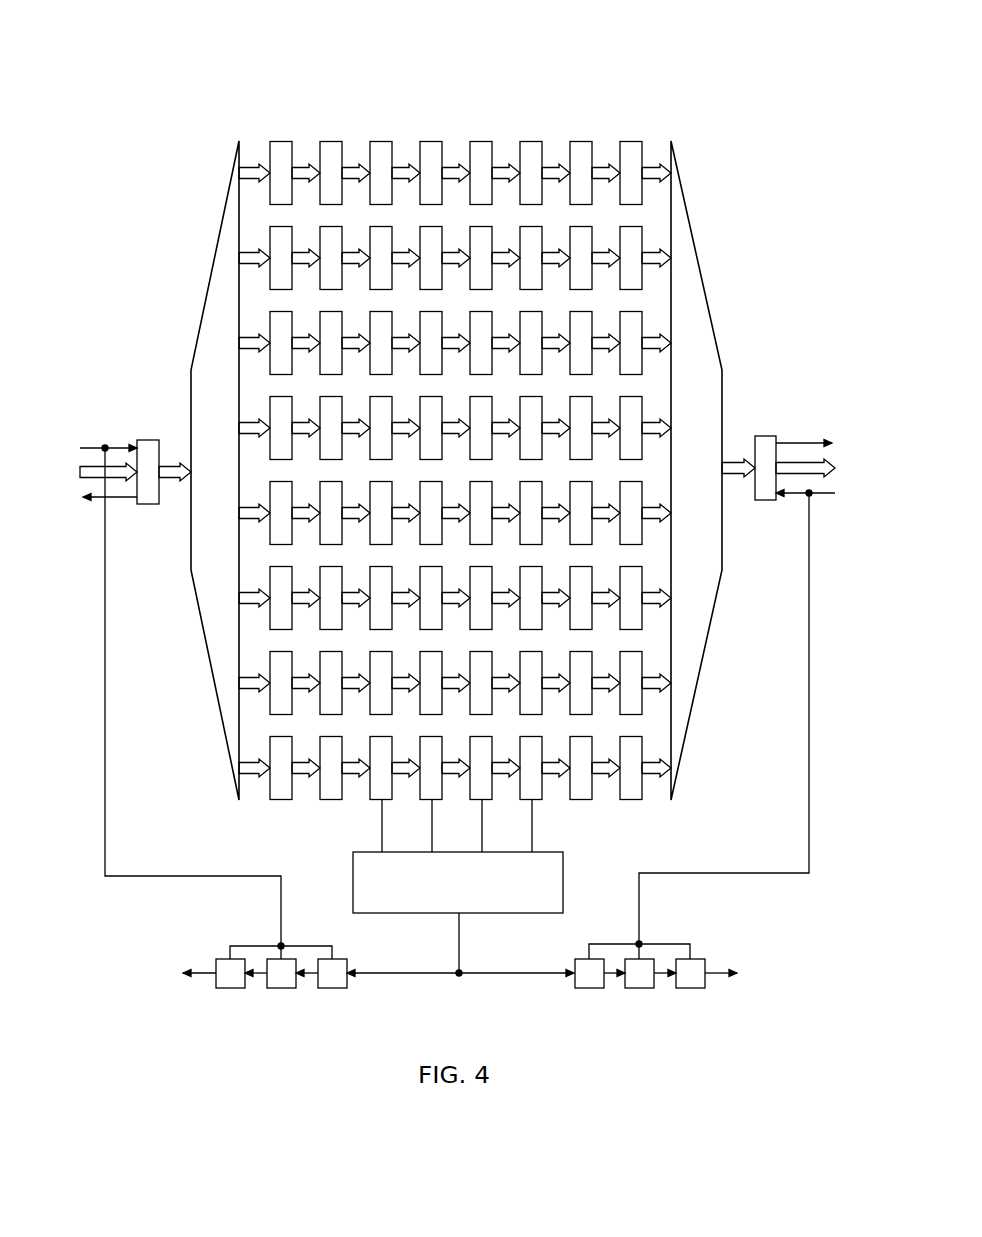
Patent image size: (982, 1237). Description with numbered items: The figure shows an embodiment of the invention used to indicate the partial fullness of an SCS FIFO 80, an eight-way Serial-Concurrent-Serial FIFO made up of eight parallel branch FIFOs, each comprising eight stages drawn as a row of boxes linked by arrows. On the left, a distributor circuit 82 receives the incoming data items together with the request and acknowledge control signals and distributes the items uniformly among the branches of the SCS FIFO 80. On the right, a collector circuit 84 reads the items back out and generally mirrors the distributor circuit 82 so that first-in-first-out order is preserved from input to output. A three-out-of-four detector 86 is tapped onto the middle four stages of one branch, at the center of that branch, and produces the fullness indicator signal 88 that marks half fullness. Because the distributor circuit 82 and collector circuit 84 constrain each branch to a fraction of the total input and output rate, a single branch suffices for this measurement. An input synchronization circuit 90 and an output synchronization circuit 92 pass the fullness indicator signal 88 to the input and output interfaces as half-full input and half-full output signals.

The SCS FIFO 80 is at (293, 59).
The distributor circuit 82 is at (224, 207).
The collector circuit 84 is at (686, 206).
The 3-out-of-4 detector 86 is at (566, 860).
The fullness indicator signal 88 is at (459, 943).
The input synchronization circuit 90 is at (281, 990).
The output synchronization circuit 92 is at (641, 989).